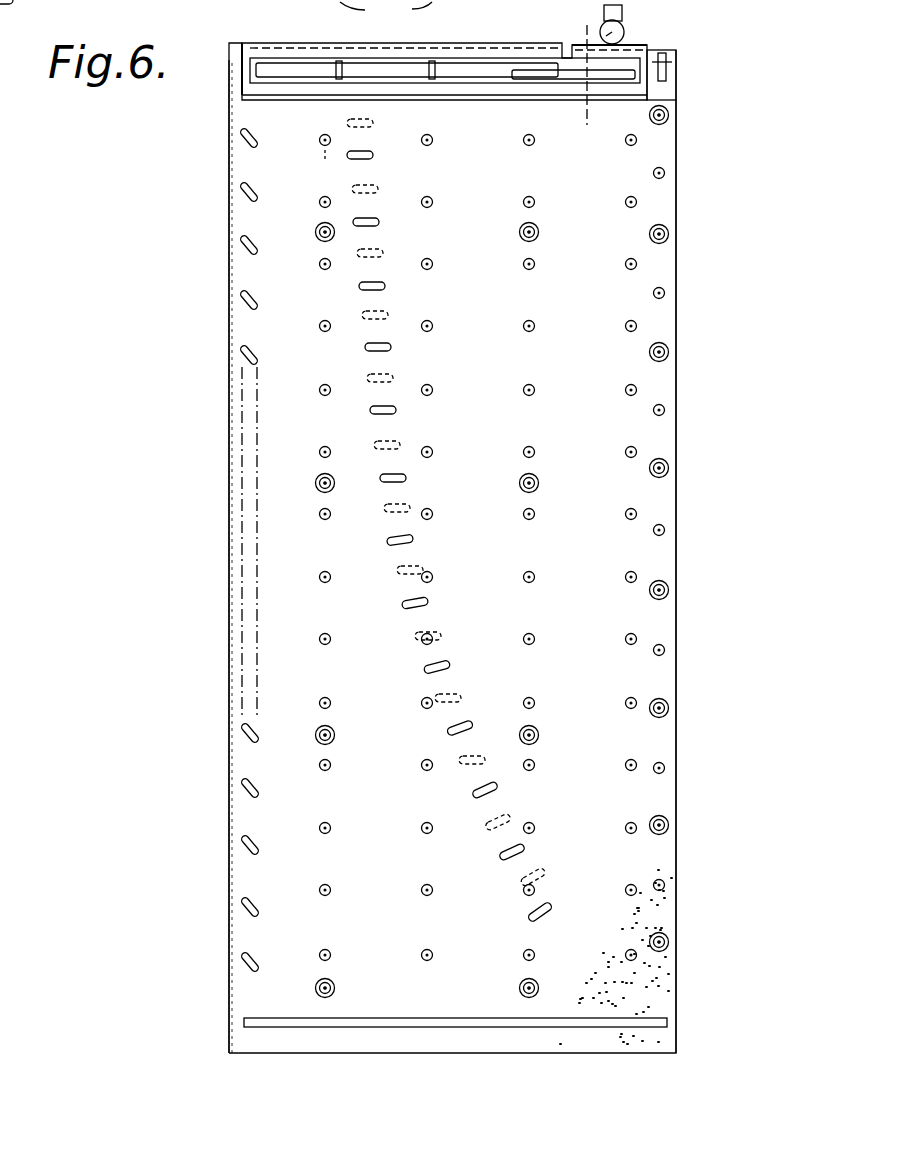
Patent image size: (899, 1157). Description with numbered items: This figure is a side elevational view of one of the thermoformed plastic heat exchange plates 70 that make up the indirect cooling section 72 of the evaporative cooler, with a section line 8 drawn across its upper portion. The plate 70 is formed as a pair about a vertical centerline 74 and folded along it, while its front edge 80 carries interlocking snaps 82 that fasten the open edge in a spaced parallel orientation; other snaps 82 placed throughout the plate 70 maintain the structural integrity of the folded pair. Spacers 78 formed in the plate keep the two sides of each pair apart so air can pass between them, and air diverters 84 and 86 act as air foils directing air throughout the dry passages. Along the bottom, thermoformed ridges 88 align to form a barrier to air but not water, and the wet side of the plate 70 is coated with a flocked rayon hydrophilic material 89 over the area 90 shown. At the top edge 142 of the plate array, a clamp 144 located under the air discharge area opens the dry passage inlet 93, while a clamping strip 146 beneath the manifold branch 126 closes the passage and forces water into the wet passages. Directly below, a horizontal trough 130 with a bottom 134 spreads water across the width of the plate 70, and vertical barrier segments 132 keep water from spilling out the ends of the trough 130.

The section line 8- 8 is at (540, 15).
The heat exchange plate 70 is at (181, 470).
The indirect cooling section 72 is at (216, 548).
The vertical centerline 74 is at (230, 287).
The spacer 78 is at (430, 260).
The front edge 80 is at (678, 276).
The interlocking snap 82 is at (650, 234).
The air diverter 84 is at (520, 882).
The air diverter 86 is at (246, 248).
The thermoformed ridge 88 is at (335, 1026).
The hydrophilic material 89 is at (465, 955).
The textured area 90 is at (628, 1000).
The dry passage inlet 93 is at (386, 14).
The branch of distribution manifold 126 is at (630, 27).
The horizontal trough 130 is at (628, 63).
The vertical barrier segment 132 is at (250, 68).
The trough bottom 134 is at (275, 86).
The top edge 142 is at (243, 46).
The clamp 144 is at (484, 52).
The clamping strip 146 is at (640, 52).